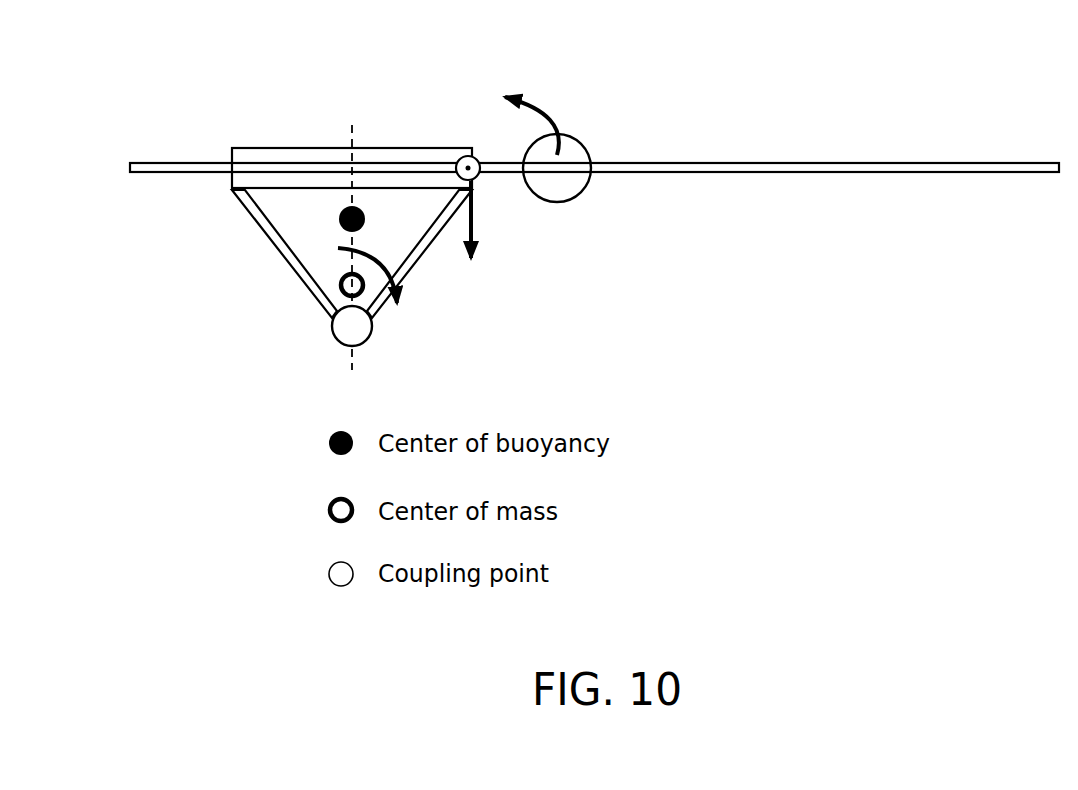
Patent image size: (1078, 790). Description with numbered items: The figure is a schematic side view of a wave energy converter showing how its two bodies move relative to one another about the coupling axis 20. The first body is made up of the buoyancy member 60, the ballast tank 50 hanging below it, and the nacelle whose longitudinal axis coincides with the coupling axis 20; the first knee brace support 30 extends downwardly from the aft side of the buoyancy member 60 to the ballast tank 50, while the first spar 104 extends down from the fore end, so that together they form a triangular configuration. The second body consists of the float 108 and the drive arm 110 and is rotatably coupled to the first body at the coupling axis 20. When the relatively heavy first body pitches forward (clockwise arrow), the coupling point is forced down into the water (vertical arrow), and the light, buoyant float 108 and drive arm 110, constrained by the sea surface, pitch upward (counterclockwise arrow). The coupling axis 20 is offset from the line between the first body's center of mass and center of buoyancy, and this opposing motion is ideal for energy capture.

The coupling axis 20 is at (470, 157).
The first knee brace support 30 is at (282, 252).
The ballast tank 50 is at (371, 334).
The first buoyancy member 60 is at (243, 157).
The first spar 104 is at (422, 265).
The float 108 is at (582, 141).
The drive arm 110 is at (497, 171).